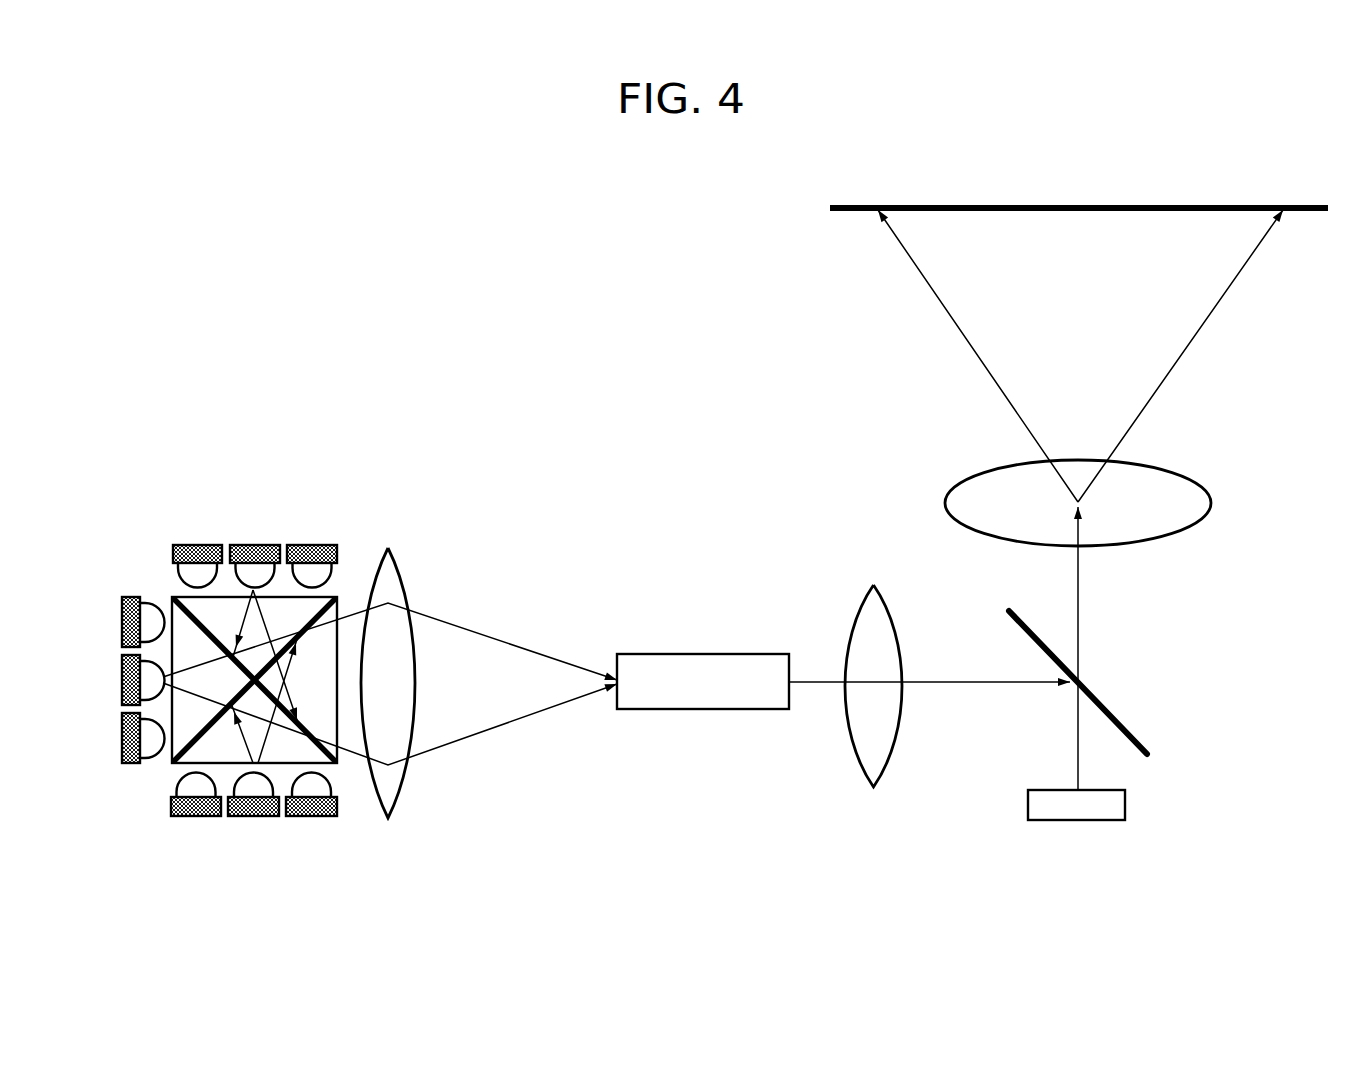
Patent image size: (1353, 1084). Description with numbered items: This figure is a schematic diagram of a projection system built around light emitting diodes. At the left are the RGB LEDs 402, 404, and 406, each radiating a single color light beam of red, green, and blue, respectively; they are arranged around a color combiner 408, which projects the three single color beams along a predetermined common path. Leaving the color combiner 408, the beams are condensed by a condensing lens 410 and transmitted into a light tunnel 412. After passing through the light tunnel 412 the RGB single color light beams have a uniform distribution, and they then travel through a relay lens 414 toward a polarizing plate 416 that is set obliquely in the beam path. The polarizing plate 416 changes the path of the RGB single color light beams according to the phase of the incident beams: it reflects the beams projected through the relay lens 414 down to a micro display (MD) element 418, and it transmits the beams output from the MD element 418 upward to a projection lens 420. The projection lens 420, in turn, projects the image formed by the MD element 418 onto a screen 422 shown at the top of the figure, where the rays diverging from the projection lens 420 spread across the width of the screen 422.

The red LED 402 is at (197, 545).
The green LED 404 is at (120, 621).
The blue LED 406 is at (197, 818).
The color combiner 408 is at (342, 587).
The condensing lens 410 is at (388, 818).
The light tunnel 412 is at (703, 654).
The relay lens 414 is at (873, 585).
The polarizing plate 416 is at (1105, 705).
The micro display (MD) element 418 is at (1125, 805).
The projection lens 420 is at (1212, 503).
The screen 422 is at (1085, 205).